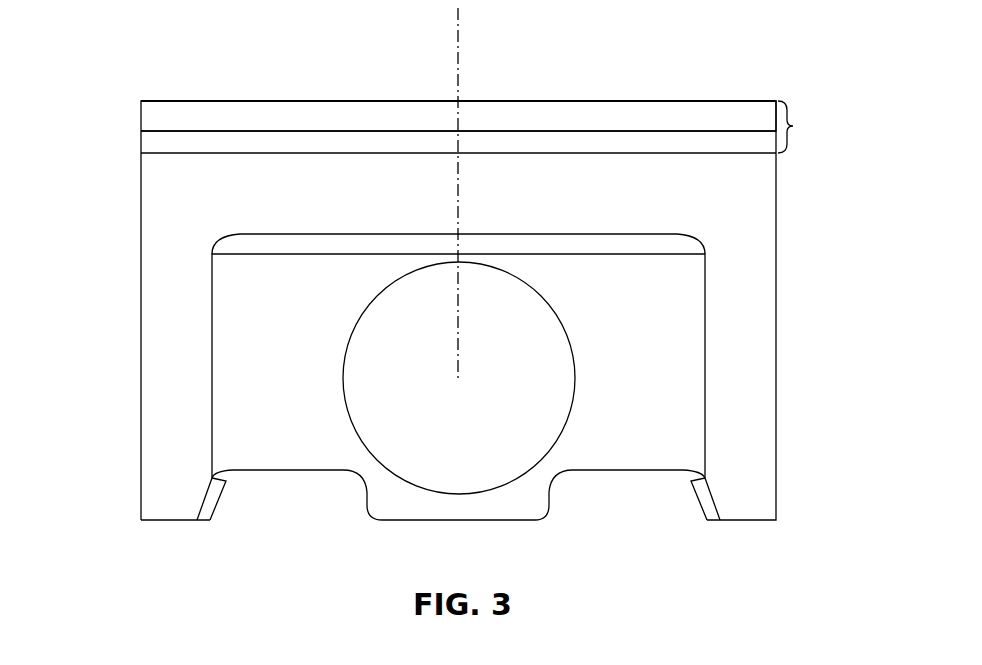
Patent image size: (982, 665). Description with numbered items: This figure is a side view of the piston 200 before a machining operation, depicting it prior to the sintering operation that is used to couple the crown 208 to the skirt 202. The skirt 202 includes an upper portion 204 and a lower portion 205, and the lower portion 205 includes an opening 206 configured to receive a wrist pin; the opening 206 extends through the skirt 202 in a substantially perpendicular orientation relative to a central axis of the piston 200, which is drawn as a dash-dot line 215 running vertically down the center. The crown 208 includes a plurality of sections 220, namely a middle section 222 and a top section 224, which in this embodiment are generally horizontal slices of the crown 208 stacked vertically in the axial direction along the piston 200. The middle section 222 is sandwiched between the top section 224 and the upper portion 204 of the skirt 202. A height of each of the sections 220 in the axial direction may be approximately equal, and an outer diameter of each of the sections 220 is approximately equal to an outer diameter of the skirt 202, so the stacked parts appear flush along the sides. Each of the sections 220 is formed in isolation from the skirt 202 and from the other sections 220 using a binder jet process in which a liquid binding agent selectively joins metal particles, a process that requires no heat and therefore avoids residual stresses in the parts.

The piston 200 is at (320, 50).
The skirt 202 is at (793, 335).
The upper portion 204 is at (793, 152).
The lower portion 205 is at (737, 530).
The opening 206 is at (468, 437).
The crown 208 is at (162, 100).
The central axis 215 is at (457, 45).
The sections 220 is at (793, 126).
The middle section 222 is at (137, 143).
The top section 224 is at (685, 105).